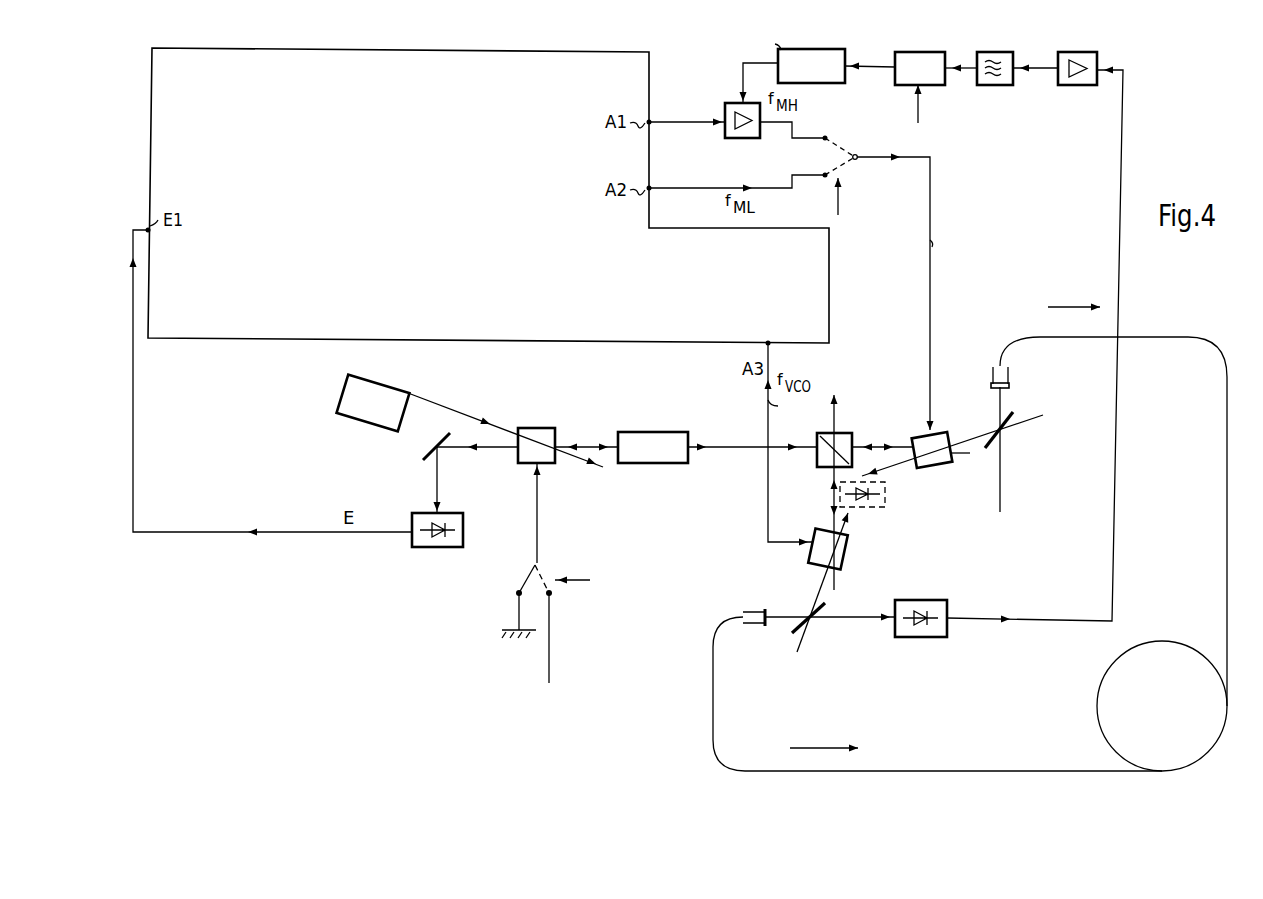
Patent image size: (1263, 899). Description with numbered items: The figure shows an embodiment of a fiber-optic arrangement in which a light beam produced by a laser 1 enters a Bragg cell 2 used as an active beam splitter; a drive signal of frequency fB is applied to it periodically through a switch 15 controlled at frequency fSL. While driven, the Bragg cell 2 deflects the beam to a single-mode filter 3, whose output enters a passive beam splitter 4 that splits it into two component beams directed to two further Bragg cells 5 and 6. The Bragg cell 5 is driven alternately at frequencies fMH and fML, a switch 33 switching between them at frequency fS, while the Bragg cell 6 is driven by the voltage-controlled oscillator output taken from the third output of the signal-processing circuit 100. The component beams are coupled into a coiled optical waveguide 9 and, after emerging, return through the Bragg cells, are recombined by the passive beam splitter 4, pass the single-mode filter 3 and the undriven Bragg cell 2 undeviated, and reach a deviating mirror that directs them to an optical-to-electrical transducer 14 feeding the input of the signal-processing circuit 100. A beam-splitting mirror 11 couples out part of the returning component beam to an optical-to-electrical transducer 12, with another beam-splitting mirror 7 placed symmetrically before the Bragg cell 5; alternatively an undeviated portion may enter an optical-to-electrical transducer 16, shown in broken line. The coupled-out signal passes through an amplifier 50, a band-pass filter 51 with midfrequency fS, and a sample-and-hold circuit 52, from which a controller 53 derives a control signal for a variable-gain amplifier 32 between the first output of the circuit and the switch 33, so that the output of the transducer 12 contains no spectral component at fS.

The laser 1 is at (365, 422).
The Bragg cell 2 is at (545, 428).
The single-mode filter 3 is at (655, 432).
The passive beam splitter 4 is at (818, 430).
The Bragg cell 5 is at (915, 433).
The Bragg cell 6 is at (845, 548).
The beam-splitting mirror 7 is at (1015, 408).
The coiled optical waveguide 9 is at (1227, 422).
The beam-splitting mirror 11 is at (812, 625).
The optical-to-electrical transducer 12 is at (925, 637).
The optical-to-electrical transducer 14 is at (438, 547).
The switch 15 is at (520, 574).
The optical-to-electrical transducer 16 is at (885, 492).
The variable-gain amplifier 32 is at (733, 138).
The switch 33 is at (909, 276).
The amplifier 50 is at (1085, 85).
The band-pass filter 51 is at (1003, 85).
The sample-and-hold circuit 52 is at (903, 85).
The controller 53 is at (818, 83).
The signal-processing circuit 100 is at (650, 62).